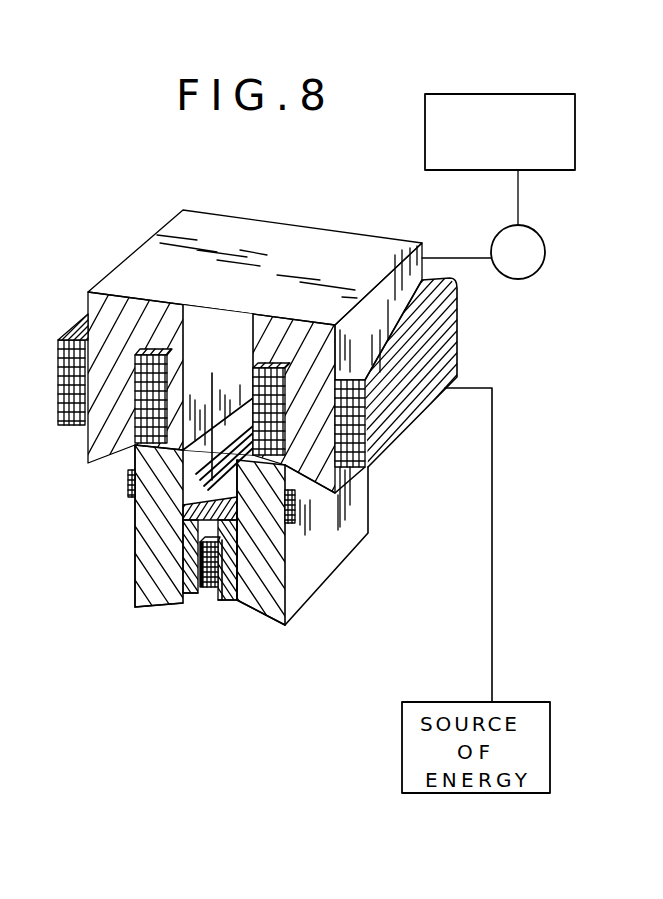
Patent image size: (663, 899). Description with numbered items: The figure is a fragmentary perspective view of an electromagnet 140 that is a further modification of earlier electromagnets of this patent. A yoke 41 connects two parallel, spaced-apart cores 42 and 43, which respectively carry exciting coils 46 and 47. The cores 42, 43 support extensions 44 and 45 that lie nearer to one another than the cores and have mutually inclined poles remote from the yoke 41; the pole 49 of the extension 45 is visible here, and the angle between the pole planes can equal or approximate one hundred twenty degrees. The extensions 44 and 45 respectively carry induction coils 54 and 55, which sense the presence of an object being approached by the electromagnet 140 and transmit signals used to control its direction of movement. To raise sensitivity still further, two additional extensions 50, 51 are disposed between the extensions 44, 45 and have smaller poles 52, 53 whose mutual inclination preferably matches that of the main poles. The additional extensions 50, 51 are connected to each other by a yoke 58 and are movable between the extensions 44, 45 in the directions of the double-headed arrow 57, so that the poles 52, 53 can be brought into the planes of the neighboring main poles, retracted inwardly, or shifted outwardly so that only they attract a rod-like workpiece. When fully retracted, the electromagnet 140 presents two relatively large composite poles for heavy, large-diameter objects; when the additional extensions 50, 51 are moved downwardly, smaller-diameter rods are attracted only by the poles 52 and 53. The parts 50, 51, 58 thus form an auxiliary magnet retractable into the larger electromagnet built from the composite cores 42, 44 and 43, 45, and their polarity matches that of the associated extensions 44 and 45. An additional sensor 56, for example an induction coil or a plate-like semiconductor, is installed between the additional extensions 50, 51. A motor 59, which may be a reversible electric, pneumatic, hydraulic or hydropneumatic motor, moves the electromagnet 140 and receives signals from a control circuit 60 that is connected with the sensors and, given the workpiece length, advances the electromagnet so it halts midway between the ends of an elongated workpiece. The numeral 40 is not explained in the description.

The electromagnet 140 is at (276, 240).
The yoke 41 is at (108, 303).
The core 42 is at (97, 442).
The exciting coil 46 is at (73, 386).
The double-headed arrow 57 is at (215, 398).
The exciting coil 47 is at (365, 442).
The core 43 is at (335, 495).
The induction coil 54 is at (128, 492).
The extension 44 is at (148, 533).
The extension 45 is at (302, 618).
The yoke 58 is at (285, 498).
The induction coil 55 is at (300, 515).
The additional extension 50 is at (190, 560).
The additional extension 51 is at (226, 600).
The pole 52 is at (183, 605).
The pole 53 is at (233, 603).
The additional sensor 56 is at (208, 594).
The pole 49 is at (285, 628).
The actuator assembly 40 is at (150, 606).
The motor 59 is at (505, 228).
The control circuit 60 is at (540, 172).